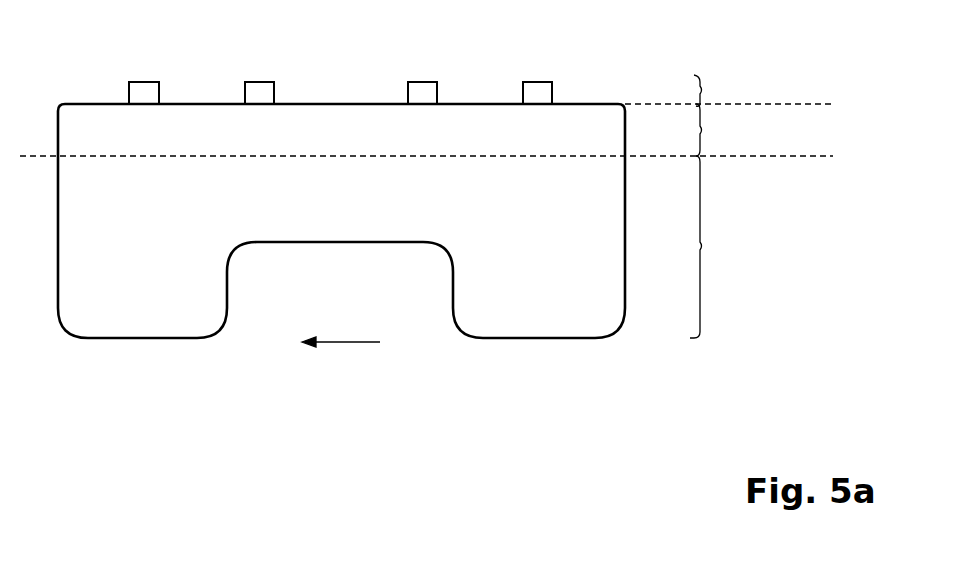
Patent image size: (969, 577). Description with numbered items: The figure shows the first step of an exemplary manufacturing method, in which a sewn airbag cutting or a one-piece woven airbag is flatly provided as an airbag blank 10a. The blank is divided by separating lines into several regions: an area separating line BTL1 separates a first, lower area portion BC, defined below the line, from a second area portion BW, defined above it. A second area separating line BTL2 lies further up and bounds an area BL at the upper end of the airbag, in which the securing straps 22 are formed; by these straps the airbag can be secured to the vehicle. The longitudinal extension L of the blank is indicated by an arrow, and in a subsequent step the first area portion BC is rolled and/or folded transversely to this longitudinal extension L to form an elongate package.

The airbag blank 10a is at (343, 103).
The securing straps 22 is at (144, 82).
The area separating line BTL1 is at (810, 157).
The second area separating line BTL2 is at (794, 103).
The area at the upper end BL is at (716, 90).
The second area portion BW is at (721, 130).
The first area portion BC is at (715, 247).
The longitudinal extension L is at (355, 345).